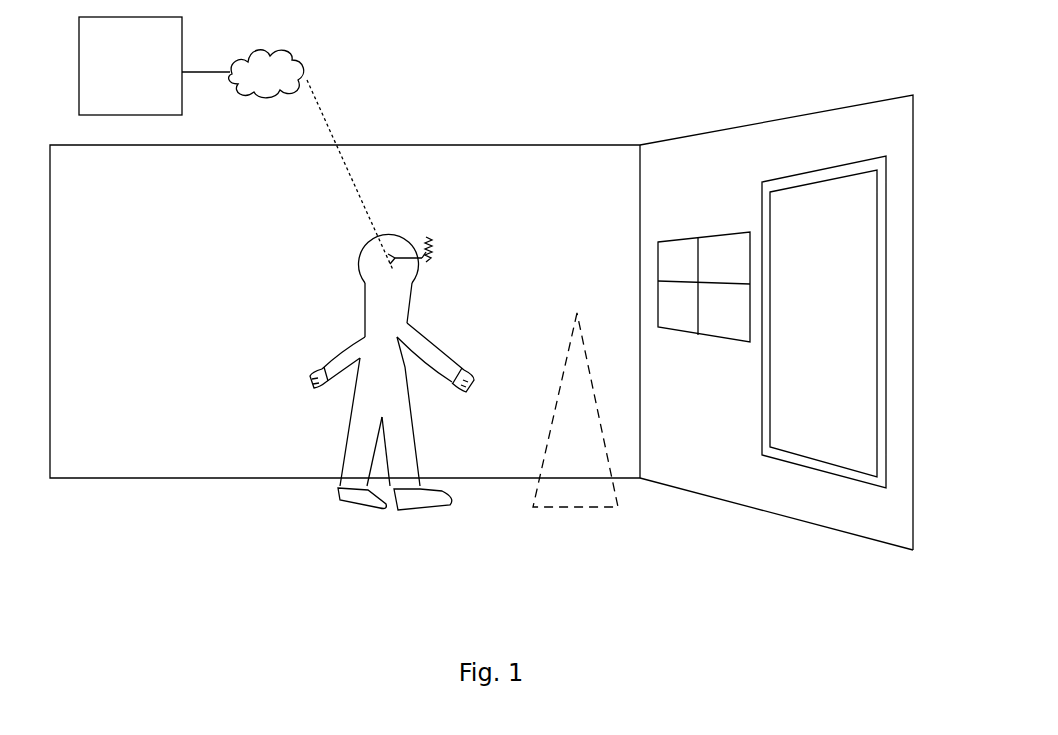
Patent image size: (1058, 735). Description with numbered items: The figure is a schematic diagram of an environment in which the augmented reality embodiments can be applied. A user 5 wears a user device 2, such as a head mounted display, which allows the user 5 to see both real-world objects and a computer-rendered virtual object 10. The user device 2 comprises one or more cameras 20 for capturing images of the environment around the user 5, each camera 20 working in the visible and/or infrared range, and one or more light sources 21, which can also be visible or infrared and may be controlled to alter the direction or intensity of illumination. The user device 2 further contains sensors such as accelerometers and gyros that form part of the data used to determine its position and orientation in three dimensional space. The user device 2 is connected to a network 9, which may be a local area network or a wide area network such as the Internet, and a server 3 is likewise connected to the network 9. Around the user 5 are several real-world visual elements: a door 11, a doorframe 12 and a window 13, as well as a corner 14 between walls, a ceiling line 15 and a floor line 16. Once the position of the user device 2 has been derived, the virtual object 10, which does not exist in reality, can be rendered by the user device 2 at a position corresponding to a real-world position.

The user device 2 is at (427, 258).
The server 3 is at (123, 62).
The user 5 is at (392, 232).
The network 9 is at (284, 50).
The virtual object 10 is at (577, 313).
The door 11 is at (857, 278).
The doorframe 12 is at (885, 187).
The window 13 is at (728, 257).
The corner 14 is at (638, 203).
The ceiling line 15 is at (805, 110).
The floor line 16 is at (772, 513).
The camera 20 is at (428, 250).
The light source 21 is at (427, 237).